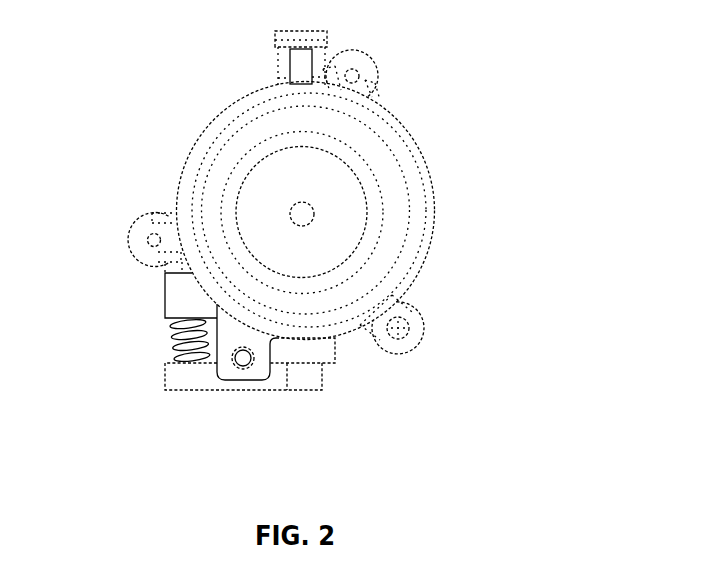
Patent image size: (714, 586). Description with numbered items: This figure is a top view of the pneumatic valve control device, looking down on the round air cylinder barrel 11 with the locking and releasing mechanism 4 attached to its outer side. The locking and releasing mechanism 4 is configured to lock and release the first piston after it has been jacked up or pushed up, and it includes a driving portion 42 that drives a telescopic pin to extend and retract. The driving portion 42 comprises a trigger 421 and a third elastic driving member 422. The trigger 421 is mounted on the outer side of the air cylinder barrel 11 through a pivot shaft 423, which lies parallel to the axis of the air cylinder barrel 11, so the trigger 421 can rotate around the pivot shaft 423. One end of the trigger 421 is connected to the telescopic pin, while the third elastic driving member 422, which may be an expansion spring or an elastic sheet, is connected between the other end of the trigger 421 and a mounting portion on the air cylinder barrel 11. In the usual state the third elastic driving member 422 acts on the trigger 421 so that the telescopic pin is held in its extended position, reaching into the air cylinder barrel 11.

The air cylinder barrel 11 is at (427, 260).
The locking and releasing mechanism 4 is at (228, 364).
The driving portion 42 is at (150, 378).
The trigger 421 is at (233, 387).
The third elastic driving member 422 is at (188, 343).
The pivot shaft 423 is at (247, 361).